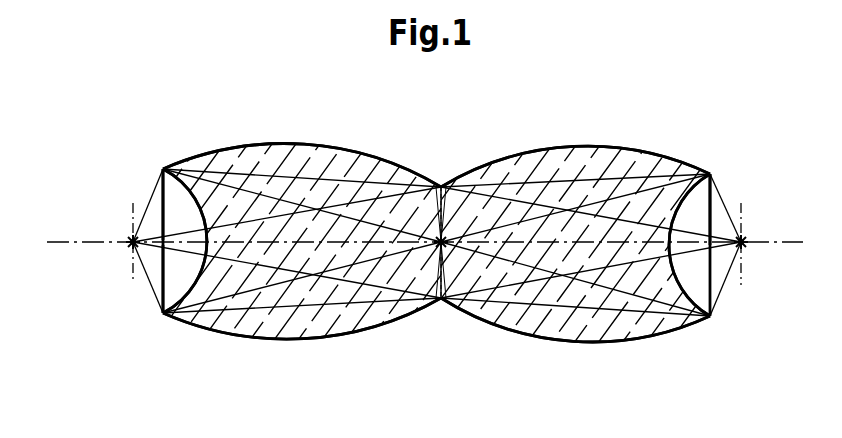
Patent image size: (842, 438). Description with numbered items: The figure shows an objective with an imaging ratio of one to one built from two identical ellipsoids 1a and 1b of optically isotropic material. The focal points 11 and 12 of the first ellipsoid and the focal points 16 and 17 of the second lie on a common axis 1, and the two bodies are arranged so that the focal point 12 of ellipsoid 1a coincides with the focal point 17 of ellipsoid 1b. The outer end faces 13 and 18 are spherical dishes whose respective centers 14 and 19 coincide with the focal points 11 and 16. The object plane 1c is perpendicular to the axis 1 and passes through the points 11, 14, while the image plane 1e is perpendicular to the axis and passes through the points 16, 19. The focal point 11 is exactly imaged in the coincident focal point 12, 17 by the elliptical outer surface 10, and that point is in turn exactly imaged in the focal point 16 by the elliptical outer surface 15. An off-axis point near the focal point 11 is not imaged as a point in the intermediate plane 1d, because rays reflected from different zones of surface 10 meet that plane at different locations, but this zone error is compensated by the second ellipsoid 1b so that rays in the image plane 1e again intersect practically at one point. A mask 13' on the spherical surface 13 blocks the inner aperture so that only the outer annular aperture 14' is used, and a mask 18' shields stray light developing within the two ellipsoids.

The common axis 1 is at (52, 242).
The ellipsoid 1a is at (300, 158).
The ellipsoid 1b is at (562, 163).
The object plane 1c is at (122, 215).
The intermediate plane 1d is at (443, 187).
The image plane 1e is at (743, 216).
The elliptical outer surface 10 is at (253, 340).
The focal point 11 is at (132, 243).
The focal point 12 is at (450, 293).
The outer end face 13 is at (173, 212).
The mask 13' is at (130, 191).
The center point 14 is at (166, 289).
The outer annular aperture 14' is at (146, 298).
The elliptical outer surface 15 is at (570, 344).
The focal point 16 is at (743, 247).
The focal point 17 is at (450, 293).
The outer end face 18 is at (723, 217).
The mask 18' is at (742, 190).
The center point 19 is at (743, 247).